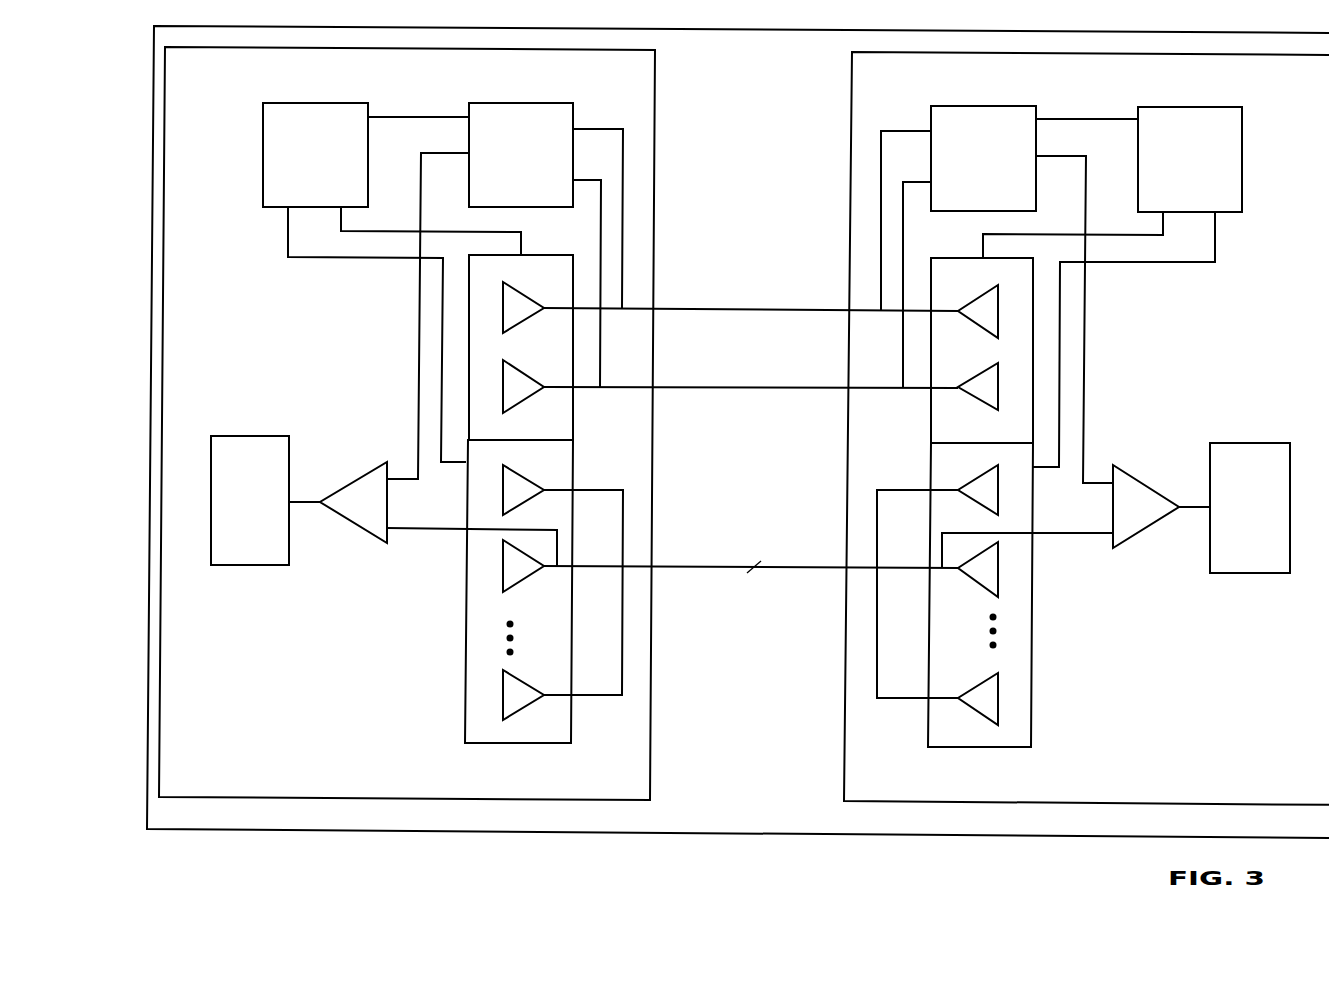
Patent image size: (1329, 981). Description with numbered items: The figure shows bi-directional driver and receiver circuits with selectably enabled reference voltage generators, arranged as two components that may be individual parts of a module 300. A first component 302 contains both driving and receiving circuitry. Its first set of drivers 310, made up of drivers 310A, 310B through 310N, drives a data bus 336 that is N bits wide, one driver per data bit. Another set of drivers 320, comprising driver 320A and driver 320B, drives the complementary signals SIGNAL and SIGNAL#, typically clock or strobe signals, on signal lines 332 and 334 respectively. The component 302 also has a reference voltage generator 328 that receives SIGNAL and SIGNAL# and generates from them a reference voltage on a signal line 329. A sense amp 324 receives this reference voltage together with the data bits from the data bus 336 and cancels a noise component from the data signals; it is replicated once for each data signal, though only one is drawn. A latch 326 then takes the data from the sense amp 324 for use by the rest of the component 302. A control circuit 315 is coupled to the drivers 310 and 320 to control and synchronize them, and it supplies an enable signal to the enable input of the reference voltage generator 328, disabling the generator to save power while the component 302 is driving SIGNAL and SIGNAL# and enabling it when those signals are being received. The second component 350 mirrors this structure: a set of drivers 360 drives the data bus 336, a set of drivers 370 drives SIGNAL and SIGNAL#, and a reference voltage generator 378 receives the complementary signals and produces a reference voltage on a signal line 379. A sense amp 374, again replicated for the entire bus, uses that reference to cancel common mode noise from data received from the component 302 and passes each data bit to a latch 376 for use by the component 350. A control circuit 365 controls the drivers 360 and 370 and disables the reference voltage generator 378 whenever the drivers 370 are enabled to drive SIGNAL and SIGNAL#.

The module 300 is at (1328, 829).
The first component 302 is at (623, 789).
The first set of drivers 310 is at (557, 734).
The driver 310A is at (539, 469).
The driver 310B is at (514, 584).
The driver 310N is at (539, 672).
The control circuit 315 is at (354, 197).
The set of drivers 320 is at (558, 432).
The driver 320A is at (539, 283).
The driver 320B is at (539, 361).
The sense amp 324 is at (373, 516).
The latch 326 is at (272, 557).
The reference voltage generator 328 is at (563, 202).
The signal line 329 is at (418, 311).
The signal line 332 is at (781, 311).
The signal line 334 is at (781, 389).
The data bus 336 is at (792, 569).
The component 350 is at (1300, 794).
The set of drivers 360 is at (1023, 744).
The control circuit 365 is at (1223, 199).
The set of drivers 370 is at (1017, 436).
The sense amp 374 is at (1147, 521).
The latch 376 is at (1263, 561).
The reference voltage generator 378 is at (1015, 206).
The signal line 379 is at (1085, 383).